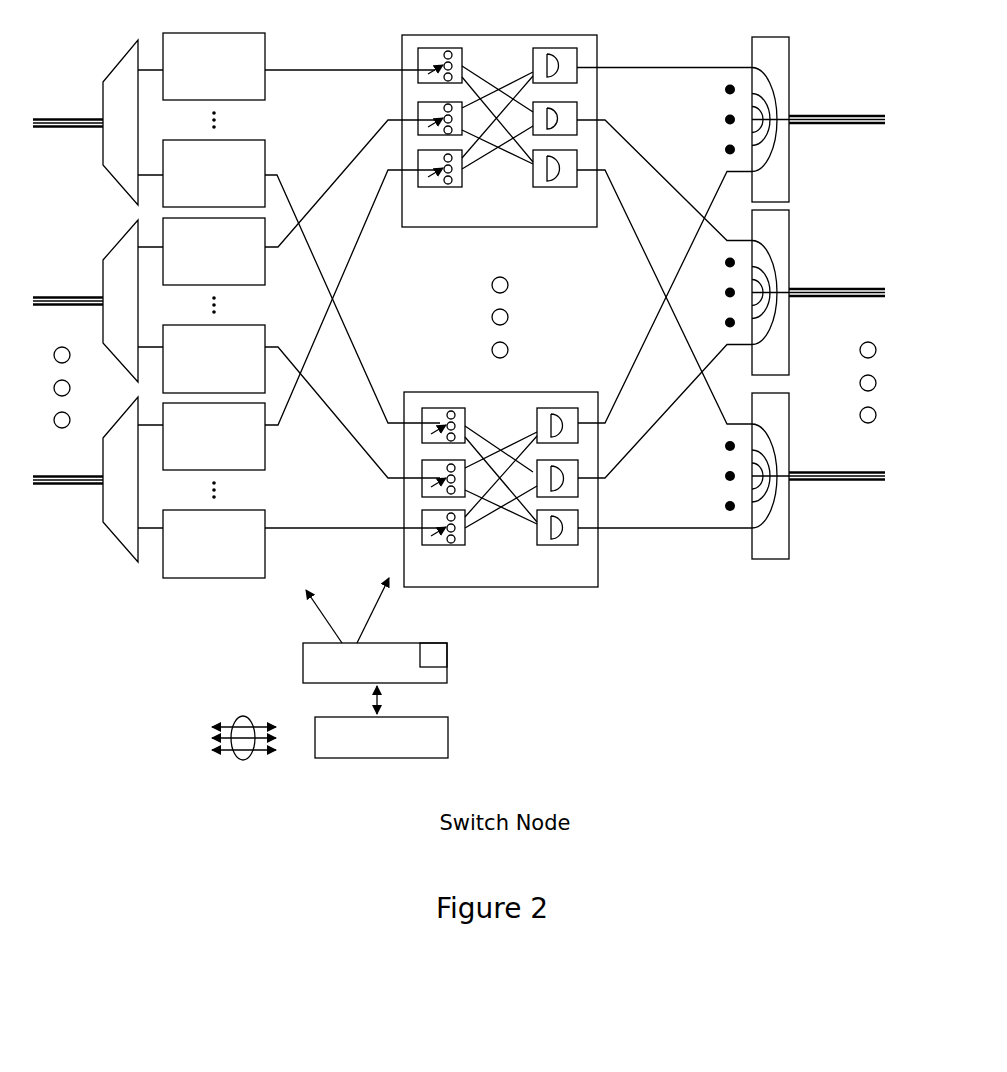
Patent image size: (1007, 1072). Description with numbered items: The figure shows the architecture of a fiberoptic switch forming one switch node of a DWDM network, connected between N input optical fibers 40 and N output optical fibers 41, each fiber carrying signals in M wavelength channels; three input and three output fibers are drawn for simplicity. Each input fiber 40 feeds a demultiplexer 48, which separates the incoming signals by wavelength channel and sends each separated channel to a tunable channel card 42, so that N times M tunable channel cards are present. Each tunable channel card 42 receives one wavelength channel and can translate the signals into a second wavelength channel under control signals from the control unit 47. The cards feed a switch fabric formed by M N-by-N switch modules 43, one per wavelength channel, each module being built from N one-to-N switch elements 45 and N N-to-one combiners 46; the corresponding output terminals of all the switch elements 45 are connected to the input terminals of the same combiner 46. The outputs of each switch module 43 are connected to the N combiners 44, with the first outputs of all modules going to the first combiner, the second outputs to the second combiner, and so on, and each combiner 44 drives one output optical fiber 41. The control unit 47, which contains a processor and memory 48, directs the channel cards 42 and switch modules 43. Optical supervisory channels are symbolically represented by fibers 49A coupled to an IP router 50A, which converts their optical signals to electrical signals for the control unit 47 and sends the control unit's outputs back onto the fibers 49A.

The input optical fiber 40 is at (47, 132).
The output optical fiber 41 is at (823, 114).
The tunable channel card 42 is at (266, 47).
The switch module 43 is at (596, 46).
The combiner 44 is at (789, 48).
The switch element 45 is at (418, 54).
The N-to-1 combiner 46 is at (596, 61).
The control unit 47 is at (447, 676).
The demultiplexer 48 is at (115, 62).
The fibers 49A is at (242, 716).
The IP router 50A is at (448, 740).